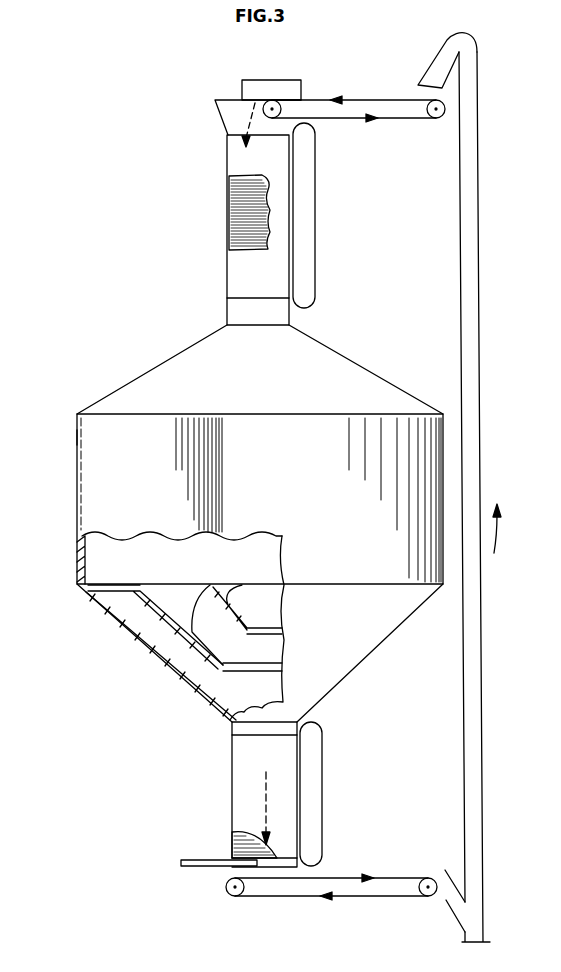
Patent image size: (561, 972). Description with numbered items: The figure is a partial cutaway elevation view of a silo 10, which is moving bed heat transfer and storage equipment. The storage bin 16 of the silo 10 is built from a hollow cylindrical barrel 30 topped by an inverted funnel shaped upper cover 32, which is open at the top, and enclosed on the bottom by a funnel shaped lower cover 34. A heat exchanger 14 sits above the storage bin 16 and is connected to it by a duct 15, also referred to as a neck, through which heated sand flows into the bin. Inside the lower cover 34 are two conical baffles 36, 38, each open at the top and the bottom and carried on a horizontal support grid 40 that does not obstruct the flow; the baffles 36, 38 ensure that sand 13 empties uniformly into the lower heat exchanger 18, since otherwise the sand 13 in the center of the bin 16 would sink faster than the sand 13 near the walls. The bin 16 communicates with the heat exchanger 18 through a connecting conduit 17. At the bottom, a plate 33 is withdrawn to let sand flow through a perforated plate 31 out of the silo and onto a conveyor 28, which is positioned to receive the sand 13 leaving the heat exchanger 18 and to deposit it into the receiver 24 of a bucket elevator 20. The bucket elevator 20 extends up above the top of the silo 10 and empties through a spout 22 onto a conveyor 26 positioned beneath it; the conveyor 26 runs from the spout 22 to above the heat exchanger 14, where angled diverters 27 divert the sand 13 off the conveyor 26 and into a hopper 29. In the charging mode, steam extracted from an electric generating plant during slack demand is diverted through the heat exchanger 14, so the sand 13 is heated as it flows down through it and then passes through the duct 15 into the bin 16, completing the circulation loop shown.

The silo 10 is at (146, 298).
The sand 13 is at (247, 120).
The heat exchanger 14 is at (238, 265).
The duct 15 is at (243, 312).
The storage bin 16 is at (70, 435).
The connecting conduit 17 is at (243, 730).
The heat exchanger 18 is at (226, 768).
The bucket elevator 20 is at (481, 335).
The spout 22 is at (440, 63).
The receiver 24 is at (447, 904).
The conveyor 26 is at (361, 98).
The diverters 27 is at (285, 80).
The conveyor 28 is at (352, 878).
The hopper 29 is at (242, 100).
The hollow cylindrical barrel 30 is at (100, 498).
The perforated plate 31 is at (290, 858).
The upper cover 32 is at (345, 376).
The plate 33 is at (196, 858).
The lower cover 34 is at (362, 662).
The conical baffle 36 is at (165, 600).
The conical baffle 38 is at (263, 612).
The horizontal support grid 40 is at (78, 586).